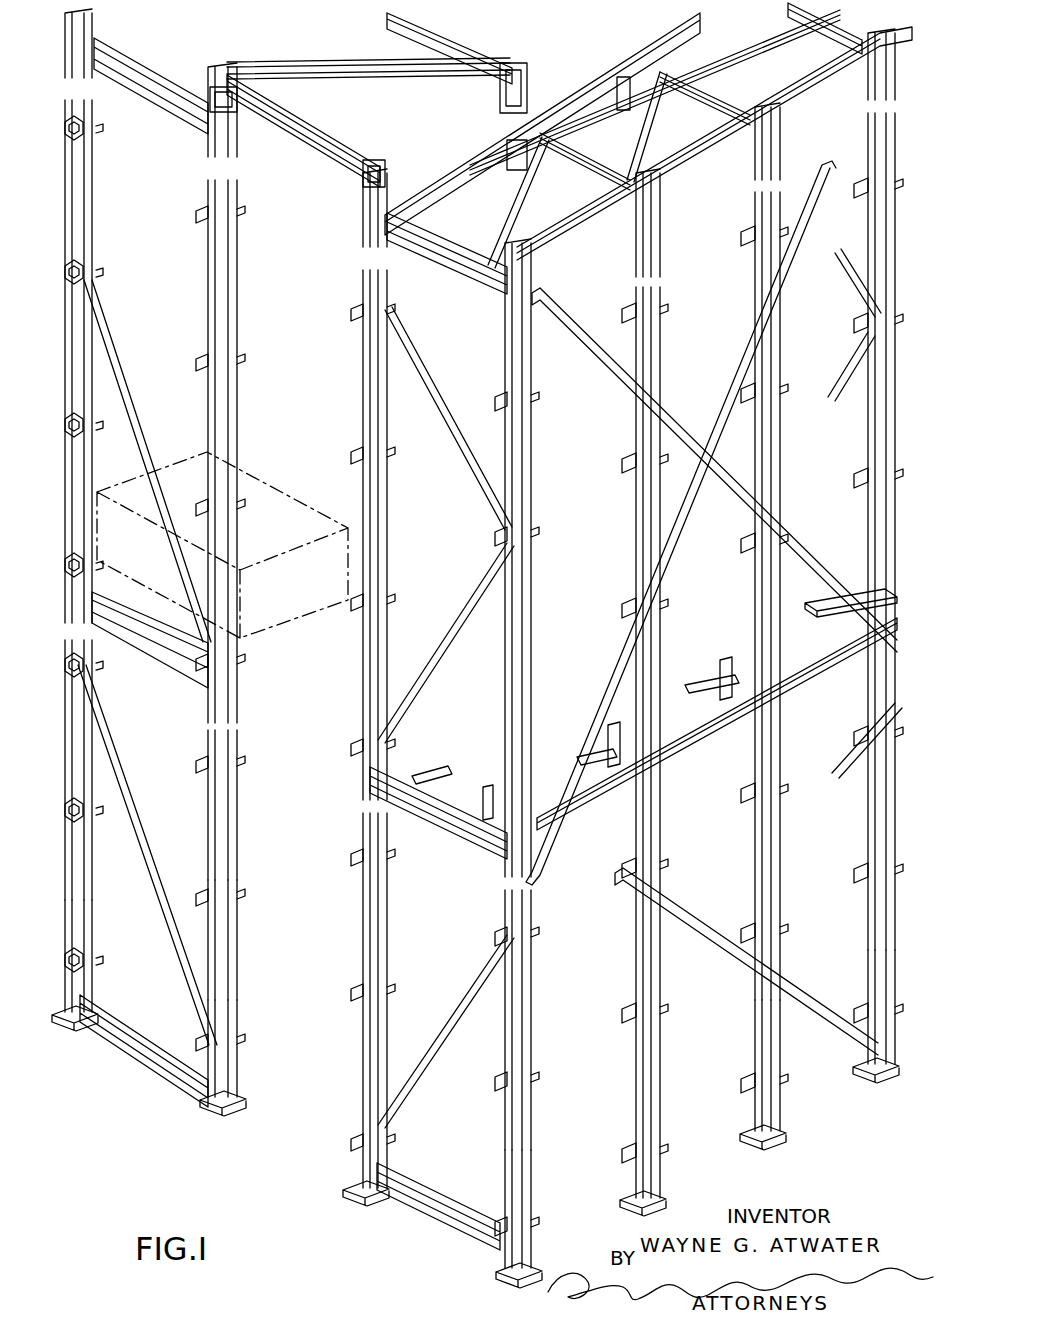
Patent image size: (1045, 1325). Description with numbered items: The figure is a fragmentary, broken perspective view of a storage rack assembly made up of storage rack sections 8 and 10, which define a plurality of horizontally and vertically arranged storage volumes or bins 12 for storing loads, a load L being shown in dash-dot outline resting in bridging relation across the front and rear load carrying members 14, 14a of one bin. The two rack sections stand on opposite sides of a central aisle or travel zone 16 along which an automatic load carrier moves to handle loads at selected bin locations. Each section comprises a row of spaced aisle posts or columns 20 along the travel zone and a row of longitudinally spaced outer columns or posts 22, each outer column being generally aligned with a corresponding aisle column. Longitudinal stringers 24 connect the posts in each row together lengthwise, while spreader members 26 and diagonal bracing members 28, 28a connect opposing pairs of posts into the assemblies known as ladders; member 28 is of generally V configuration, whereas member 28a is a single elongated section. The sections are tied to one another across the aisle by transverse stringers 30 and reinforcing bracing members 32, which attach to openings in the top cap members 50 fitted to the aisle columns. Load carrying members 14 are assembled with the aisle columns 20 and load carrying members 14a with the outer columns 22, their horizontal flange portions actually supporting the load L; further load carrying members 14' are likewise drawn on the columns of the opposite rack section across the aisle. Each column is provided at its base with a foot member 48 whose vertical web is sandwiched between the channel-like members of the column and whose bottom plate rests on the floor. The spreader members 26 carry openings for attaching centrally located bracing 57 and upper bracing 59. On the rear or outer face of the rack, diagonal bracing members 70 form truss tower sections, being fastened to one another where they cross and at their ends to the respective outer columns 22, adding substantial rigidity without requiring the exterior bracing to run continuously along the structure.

The storage rack section 8 is at (624, 50).
The storage rack section 10 is at (150, 66).
The storage volume or bin 12 is at (760, 138).
The load carrying member 14 is at (295, 678).
The load carrying member 14a is at (78, 271).
The bracket 14' is at (698, 670).
The aisle or travel zone 16 is at (300, 1095).
The aisle post or column 20 is at (240, 950).
The outer column or post 22 is at (85, 925).
The longitudinal stringer 24 is at (590, 82).
The spreader member 26 is at (178, 86).
The bracing member 28 is at (117, 338).
The bracing member 28a is at (122, 745).
The transverse stringer 30 is at (455, 50).
The reinforcing bracing member 32 is at (338, 40).
The foot member 48 is at (70, 1030).
The top cap member 50 is at (240, 105).
The centrally located bracing 57 is at (725, 680).
The upper bracing 59 is at (512, 210).
The diagonal bracing member 70 is at (680, 480).
The load L is at (258, 472).